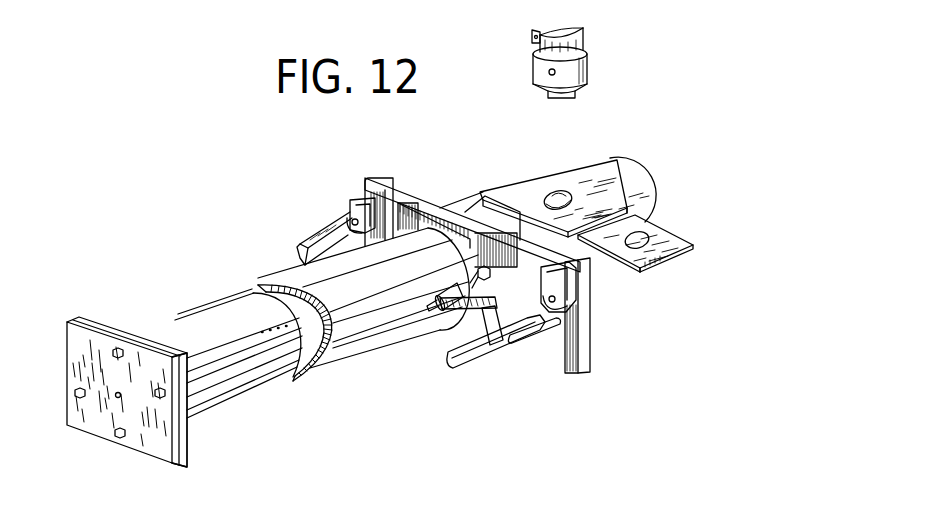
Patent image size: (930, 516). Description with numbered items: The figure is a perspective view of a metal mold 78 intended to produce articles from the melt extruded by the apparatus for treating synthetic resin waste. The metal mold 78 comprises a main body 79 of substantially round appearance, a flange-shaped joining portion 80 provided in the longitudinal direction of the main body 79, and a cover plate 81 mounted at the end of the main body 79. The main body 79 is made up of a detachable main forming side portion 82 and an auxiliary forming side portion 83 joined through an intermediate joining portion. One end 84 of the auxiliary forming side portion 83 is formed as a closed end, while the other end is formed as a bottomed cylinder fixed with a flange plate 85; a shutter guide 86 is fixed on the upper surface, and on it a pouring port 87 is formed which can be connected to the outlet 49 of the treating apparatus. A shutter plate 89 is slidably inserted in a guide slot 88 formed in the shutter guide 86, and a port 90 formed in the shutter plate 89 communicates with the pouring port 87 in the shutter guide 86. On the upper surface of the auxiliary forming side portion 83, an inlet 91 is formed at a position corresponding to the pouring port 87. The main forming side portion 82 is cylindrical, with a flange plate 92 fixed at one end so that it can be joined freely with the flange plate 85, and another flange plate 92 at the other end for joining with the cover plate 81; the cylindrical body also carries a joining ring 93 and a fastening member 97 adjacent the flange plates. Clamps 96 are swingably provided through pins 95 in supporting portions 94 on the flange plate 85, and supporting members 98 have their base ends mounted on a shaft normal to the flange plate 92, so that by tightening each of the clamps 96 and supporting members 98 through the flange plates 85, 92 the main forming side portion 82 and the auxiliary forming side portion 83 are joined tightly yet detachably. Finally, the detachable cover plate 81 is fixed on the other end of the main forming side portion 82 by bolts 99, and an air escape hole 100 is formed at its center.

The outlet 49 is at (588, 68).
The metal mold 78 is at (238, 230).
The main body 79 is at (202, 333).
The flange-shaped joining portion 80 is at (387, 174).
The cover plate 81 is at (98, 340).
The main forming side portion 82 is at (343, 352).
The auxiliary forming side portion 83 is at (644, 188).
The closed end 84 is at (634, 169).
The flange plate 85 is at (591, 322).
The shutter guide 86 is at (502, 188).
The pouring port 87 is at (557, 197).
The guide slot 88 is at (597, 228).
The shutter plate 89 is at (648, 263).
The port 90 is at (649, 236).
The inlet 91 is at (560, 196).
The flange plate 92 is at (414, 208).
The flange 93 is at (188, 437).
The supporting portion 94 is at (367, 190).
The pin 95 is at (352, 220).
The clamp 96 is at (318, 246).
The nut 97 is at (480, 270).
The supporting member 98 is at (460, 318).
The bolt 99 is at (122, 437).
The air escape hole 100 is at (116, 399).